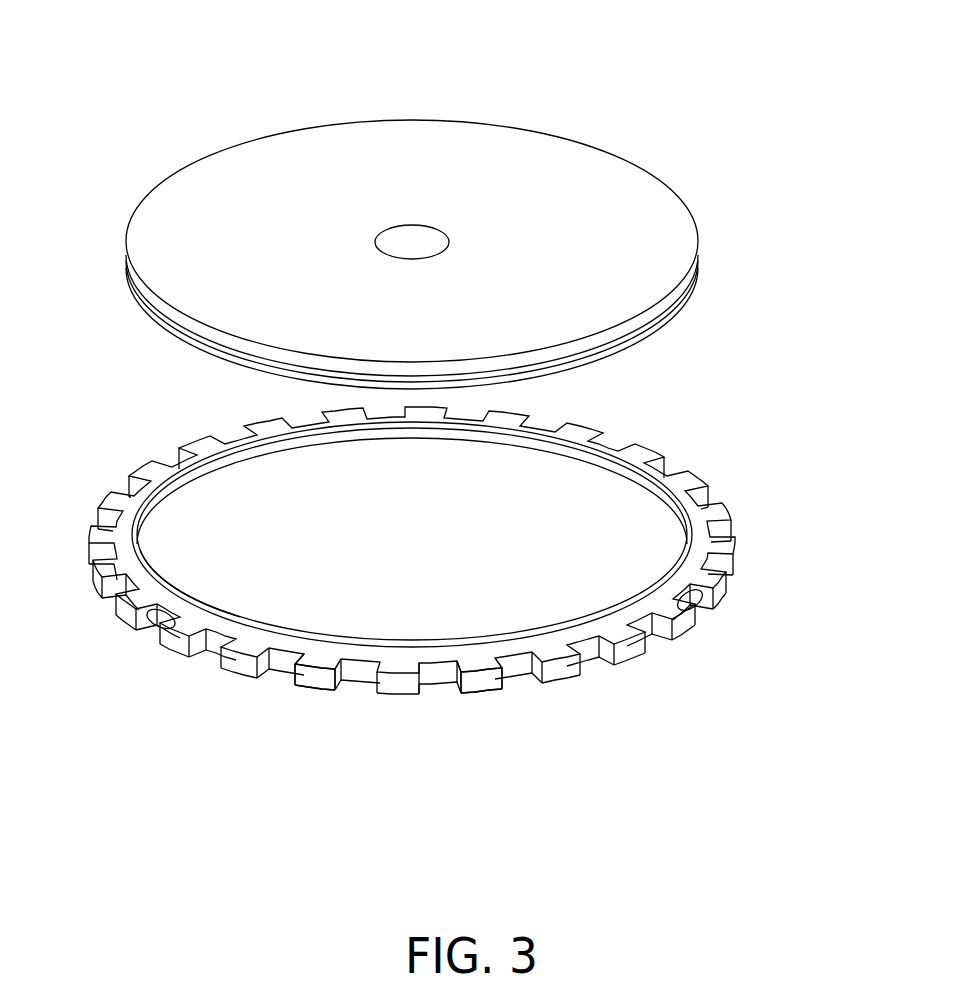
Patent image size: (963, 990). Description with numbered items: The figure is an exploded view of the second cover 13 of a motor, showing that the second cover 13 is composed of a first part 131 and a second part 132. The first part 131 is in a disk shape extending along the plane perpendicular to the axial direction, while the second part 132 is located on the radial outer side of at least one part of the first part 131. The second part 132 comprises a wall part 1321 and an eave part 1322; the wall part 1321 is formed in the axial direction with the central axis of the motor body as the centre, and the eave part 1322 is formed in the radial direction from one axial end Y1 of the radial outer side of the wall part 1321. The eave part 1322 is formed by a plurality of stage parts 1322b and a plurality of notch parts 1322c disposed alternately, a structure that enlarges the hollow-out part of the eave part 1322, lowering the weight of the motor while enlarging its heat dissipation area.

The second cover 13 is at (102, 68).
The first part 131 is at (593, 215).
The second part 132 is at (498, 517).
The wall part 1321 is at (628, 608).
The eave part 1322 is at (620, 643).
The stage part 1322b is at (483, 676).
The notch part 1322c is at (360, 683).
The axial end Y1 is at (193, 620).